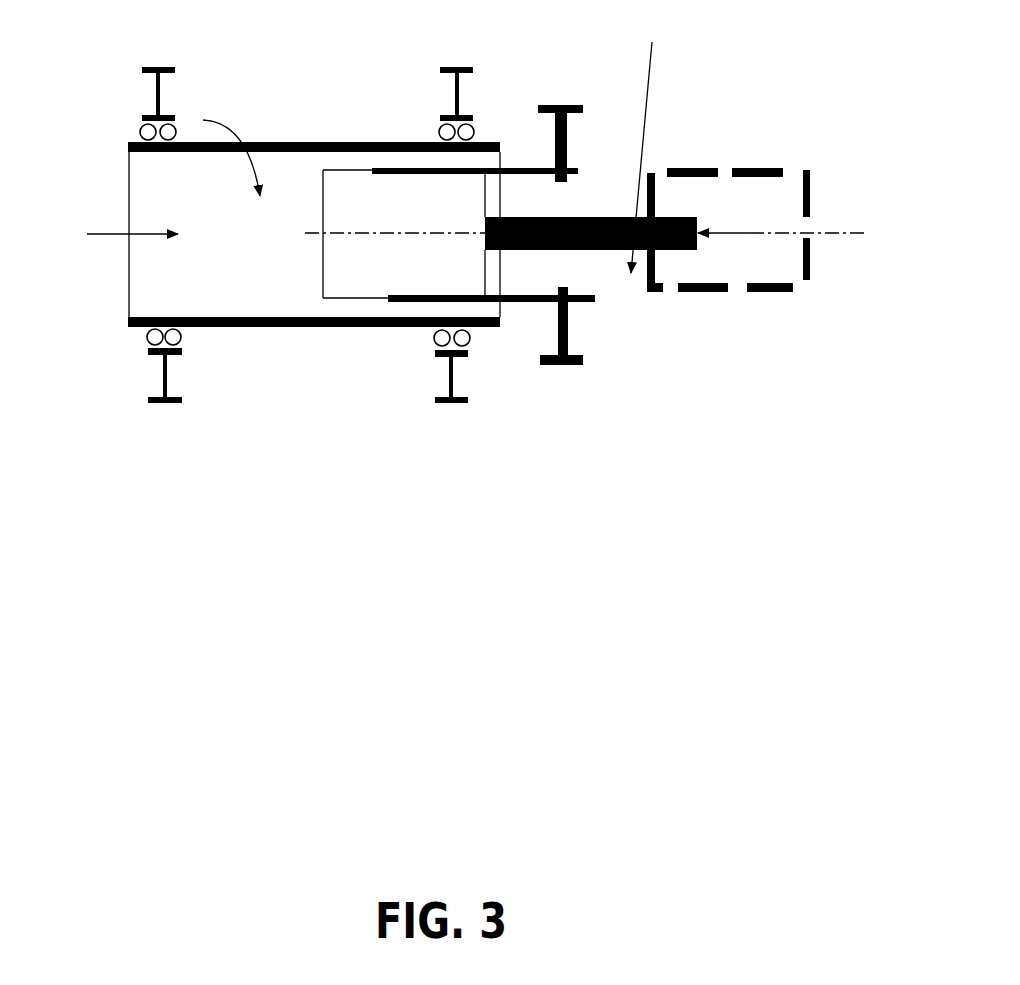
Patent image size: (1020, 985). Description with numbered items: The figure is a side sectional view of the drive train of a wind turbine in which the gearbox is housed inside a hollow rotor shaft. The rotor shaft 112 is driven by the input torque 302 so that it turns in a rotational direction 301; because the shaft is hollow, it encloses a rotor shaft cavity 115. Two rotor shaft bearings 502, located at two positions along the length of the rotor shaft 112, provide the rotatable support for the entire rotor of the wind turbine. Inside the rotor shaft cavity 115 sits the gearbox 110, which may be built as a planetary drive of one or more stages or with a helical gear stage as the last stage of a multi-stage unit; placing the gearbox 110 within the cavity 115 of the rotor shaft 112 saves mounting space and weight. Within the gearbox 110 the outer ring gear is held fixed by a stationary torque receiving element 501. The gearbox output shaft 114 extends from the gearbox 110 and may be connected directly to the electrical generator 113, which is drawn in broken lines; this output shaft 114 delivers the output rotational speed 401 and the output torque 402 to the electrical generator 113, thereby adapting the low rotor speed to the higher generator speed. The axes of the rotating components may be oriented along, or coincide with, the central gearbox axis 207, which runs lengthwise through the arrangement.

The gearbox 110 is at (343, 172).
The rotor shaft 112 is at (317, 142).
The electrical generator 113 is at (728, 172).
The gearbox output shaft 114 is at (646, 140).
The rotor shaft cavity 115 is at (150, 197).
The central gearbox axis 207 is at (850, 235).
The rotational direction 301 is at (258, 205).
The input torque 302 is at (93, 240).
The output rotational speed 401 is at (577, 193).
The output torque 402 is at (707, 237).
The stationary torque receiving element 501 is at (550, 139).
The rotor shaft bearings 502 is at (437, 338).